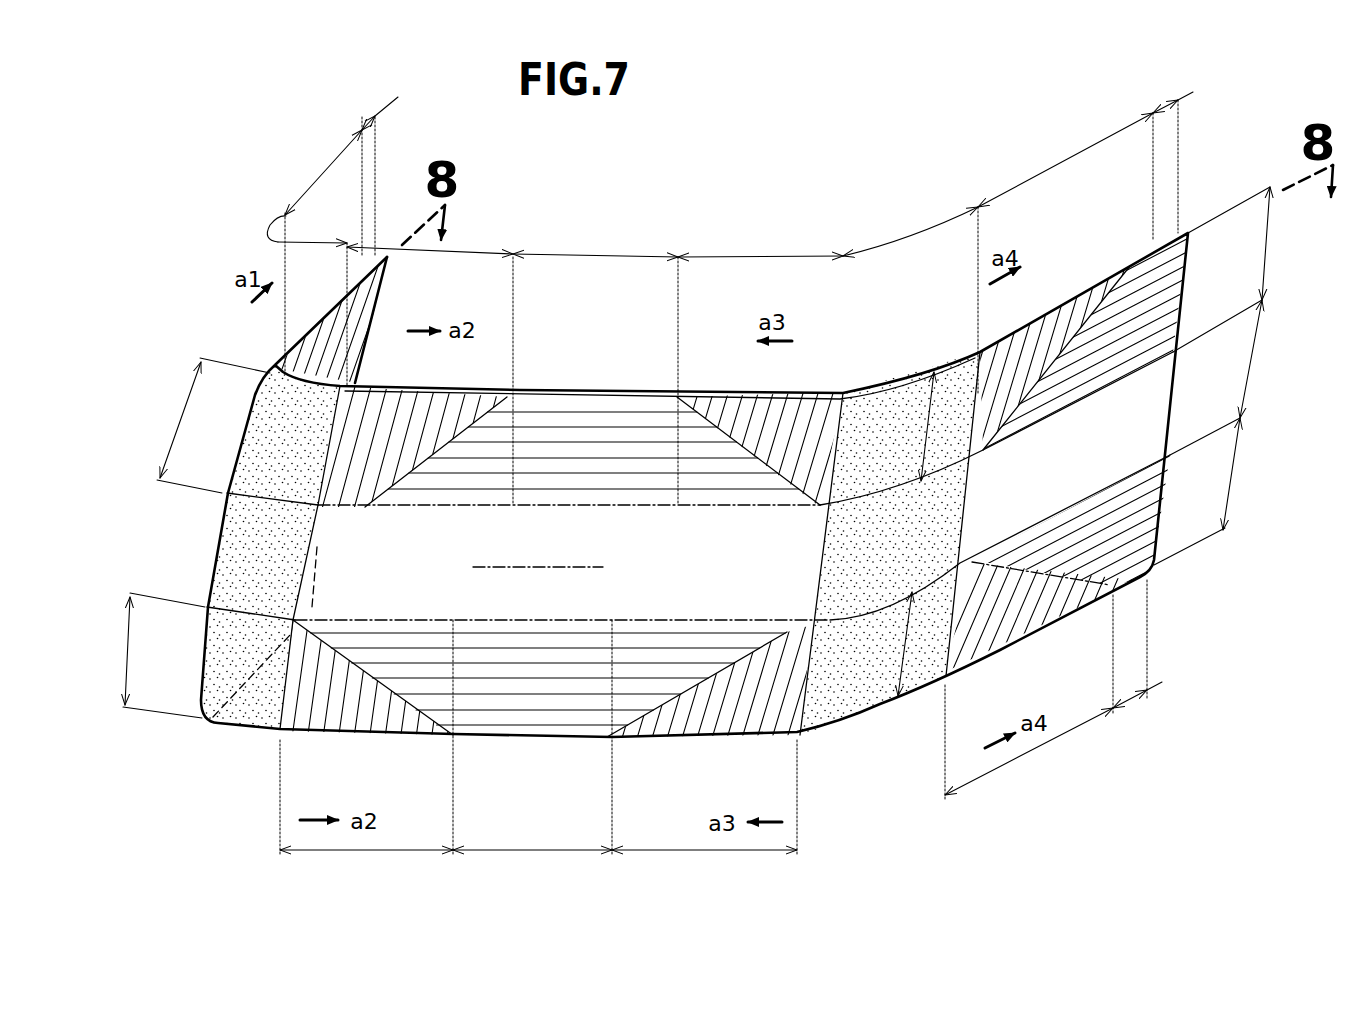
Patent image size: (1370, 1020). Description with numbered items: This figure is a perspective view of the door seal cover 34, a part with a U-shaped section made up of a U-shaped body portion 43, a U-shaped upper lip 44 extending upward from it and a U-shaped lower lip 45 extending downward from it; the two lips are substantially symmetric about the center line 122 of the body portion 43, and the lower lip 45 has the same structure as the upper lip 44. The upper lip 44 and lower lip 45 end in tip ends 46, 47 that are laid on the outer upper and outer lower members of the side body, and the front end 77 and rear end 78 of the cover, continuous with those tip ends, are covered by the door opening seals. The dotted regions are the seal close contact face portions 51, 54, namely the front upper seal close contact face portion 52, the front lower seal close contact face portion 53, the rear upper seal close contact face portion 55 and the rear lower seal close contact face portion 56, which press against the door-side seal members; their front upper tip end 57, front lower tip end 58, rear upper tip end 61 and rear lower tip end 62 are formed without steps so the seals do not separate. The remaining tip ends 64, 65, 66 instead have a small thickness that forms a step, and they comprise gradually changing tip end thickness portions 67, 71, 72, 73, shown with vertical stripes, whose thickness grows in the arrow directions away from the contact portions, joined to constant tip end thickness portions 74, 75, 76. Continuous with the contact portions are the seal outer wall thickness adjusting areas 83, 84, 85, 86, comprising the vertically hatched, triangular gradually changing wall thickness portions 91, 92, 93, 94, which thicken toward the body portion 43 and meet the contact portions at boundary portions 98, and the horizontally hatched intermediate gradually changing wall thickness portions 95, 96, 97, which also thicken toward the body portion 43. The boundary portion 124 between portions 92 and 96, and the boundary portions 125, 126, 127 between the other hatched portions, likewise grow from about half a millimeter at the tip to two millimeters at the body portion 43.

The door seal cover 34 is at (690, 207).
The body portion 43 is at (1255, 340).
The upper lip 44 is at (1268, 250).
The lower lip 45 is at (1237, 470).
The tip end of the upper lip 46 is at (537, 390).
The tip end of the lower lip 47 is at (540, 737).
The seal close contact face portions 51 is at (302, 243).
The front upper seal close contact face portion 52 is at (180, 415).
The front lower seal close contact face portion 53 is at (122, 647).
The seal close contact face portions 54 is at (905, 232).
The rear upper seal close contact face portion 55 is at (934, 368).
The rear lower seal close contact face portion 56 is at (905, 700).
The front upper tip end 57 is at (352, 395).
The front lower tip end 58 is at (228, 727).
The rear upper tip end 61 is at (905, 377).
The rear lower tip end 62 is at (875, 710).
The remaining tip end 64 is at (345, 285).
The remaining tip end 65 is at (590, 393).
The remaining tip end 66 is at (1082, 302).
The gradually changing tip end thickness portion 67 is at (322, 173).
The gradually changing tip end thickness portion 71 is at (500, 253).
The gradually changing tip end thickness portion 72 is at (752, 256).
The gradually changing tip end thickness portion 73 is at (1060, 163).
The constant tip end thickness portion 74 is at (362, 117).
The constant tip end thickness portion 75 is at (612, 256).
The constant tip end thickness portion 76 is at (1168, 105).
The front end 77 is at (390, 262).
The rear end 78 is at (1193, 387).
The seal outer wall thickness adjusting area 83 is at (343, 313).
The seal outer wall thickness adjusting area 84 is at (395, 402).
The seal outer wall thickness adjusting area 85 is at (765, 405).
The seal outer wall thickness adjusting area 86 is at (1020, 317).
The gradually changing wall thickness portion 91 is at (332, 337).
The gradually changing wall thickness portion 92 is at (435, 412).
The gradually changing wall thickness portion 93 is at (795, 405).
The gradually changing wall thickness portion 94 is at (1047, 325).
The intermediate gradually changing wall thickness portion 95 is at (372, 300).
The intermediate gradually changing wall thickness portion 96 is at (632, 400).
The intermediate gradually changing wall thickness portion 97 is at (1135, 310).
The boundary portions 98 is at (292, 660).
The center line 122 is at (580, 567).
The boundary portion 124 is at (413, 450).
The boundary portion 125 is at (332, 318).
The boundary portion 126 is at (722, 455).
The boundary portion 127 is at (1082, 335).